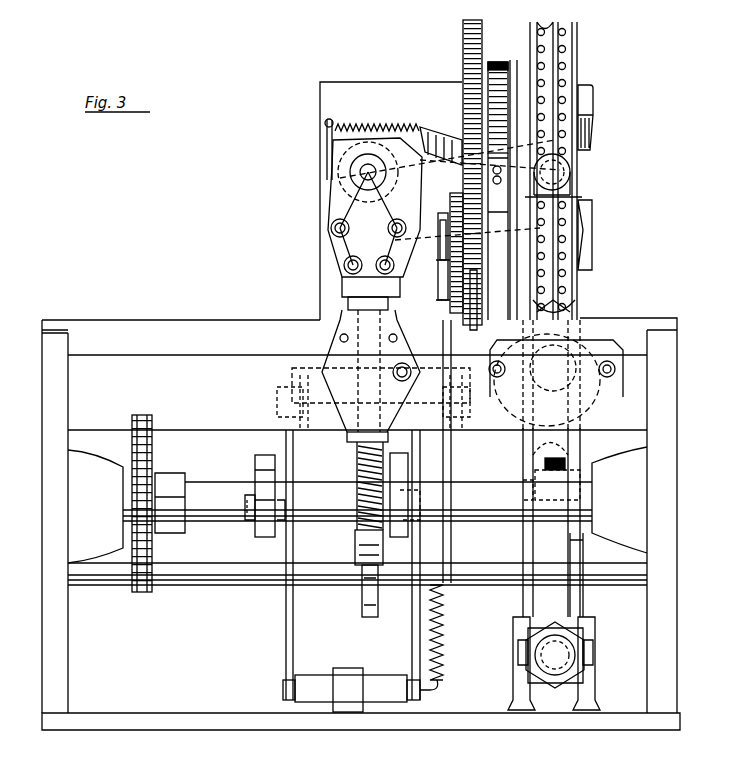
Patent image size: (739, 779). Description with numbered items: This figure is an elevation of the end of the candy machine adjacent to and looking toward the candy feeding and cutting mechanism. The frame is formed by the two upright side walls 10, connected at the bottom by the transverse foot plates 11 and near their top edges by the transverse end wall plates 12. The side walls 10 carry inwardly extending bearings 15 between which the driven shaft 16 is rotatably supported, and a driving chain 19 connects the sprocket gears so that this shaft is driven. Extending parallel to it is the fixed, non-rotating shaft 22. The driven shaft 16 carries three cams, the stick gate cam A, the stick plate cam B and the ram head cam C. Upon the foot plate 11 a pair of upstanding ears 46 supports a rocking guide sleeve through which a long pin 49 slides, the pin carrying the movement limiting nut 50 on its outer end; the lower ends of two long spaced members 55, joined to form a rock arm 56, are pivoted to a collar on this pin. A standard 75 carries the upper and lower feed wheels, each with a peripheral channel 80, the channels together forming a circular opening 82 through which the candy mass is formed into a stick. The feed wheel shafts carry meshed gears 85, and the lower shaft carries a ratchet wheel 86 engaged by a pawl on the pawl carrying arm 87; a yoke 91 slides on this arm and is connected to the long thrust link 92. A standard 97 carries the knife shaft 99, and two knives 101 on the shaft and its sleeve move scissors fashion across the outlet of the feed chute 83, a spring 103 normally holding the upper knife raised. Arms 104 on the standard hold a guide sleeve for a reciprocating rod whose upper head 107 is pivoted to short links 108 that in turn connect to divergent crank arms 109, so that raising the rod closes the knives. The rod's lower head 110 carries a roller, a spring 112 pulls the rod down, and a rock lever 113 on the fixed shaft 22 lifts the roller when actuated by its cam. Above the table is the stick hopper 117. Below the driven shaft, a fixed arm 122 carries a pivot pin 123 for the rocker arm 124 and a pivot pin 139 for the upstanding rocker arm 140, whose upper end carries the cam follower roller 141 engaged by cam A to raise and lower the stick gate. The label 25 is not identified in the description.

The side walls 10 is at (52, 388).
The bottom foot plates 11 is at (130, 724).
The end wall plates 12 is at (162, 393).
The bearings 15 is at (76, 470).
The driven shaft 16 is at (210, 492).
The driving chain 19 is at (136, 593).
The fixed shaft 22 is at (212, 584).
The mounting bolts 25 is at (616, 370).
The upstanding ears 46 is at (595, 630).
The long pin 49 is at (548, 662).
The movement limiting nut 50 is at (568, 672).
The spaced members 55 is at (580, 598).
The rock arm 56 is at (512, 605).
The standard 75 is at (500, 62).
The peripheral channel 80 is at (562, 50).
The circular opening 82 is at (568, 172).
The feed chute 83 is at (580, 197).
The gears 85 is at (462, 27).
The ratchet wheel 86 is at (450, 200).
The pawl carrying arm 87 is at (430, 280).
The yoke 91 is at (438, 235).
The thrust link 92 is at (447, 462).
The standard 97 is at (343, 315).
The knife shaft 99 is at (366, 173).
The knives 101 is at (585, 130).
The spring 103 is at (392, 124).
The arms 104 is at (346, 436).
The head 107 is at (342, 286).
The short links 108 is at (340, 251).
The crank arms 109 is at (338, 212).
The head 110 is at (356, 542).
The spring 112 is at (356, 460).
The rock lever 113 is at (362, 600).
The hopper 117 is at (312, 114).
The fixed arm 122 is at (350, 676).
The pivot pin 123 is at (438, 688).
The rocker arm 124 is at (413, 634).
The pivot pin 139 is at (283, 691).
The upstanding rocker arm 140 is at (286, 618).
The cam follower roller 141 is at (262, 540).
The stick gate cam A is at (257, 458).
The stick plate cam B is at (404, 473).
The ram head cam C is at (548, 540).